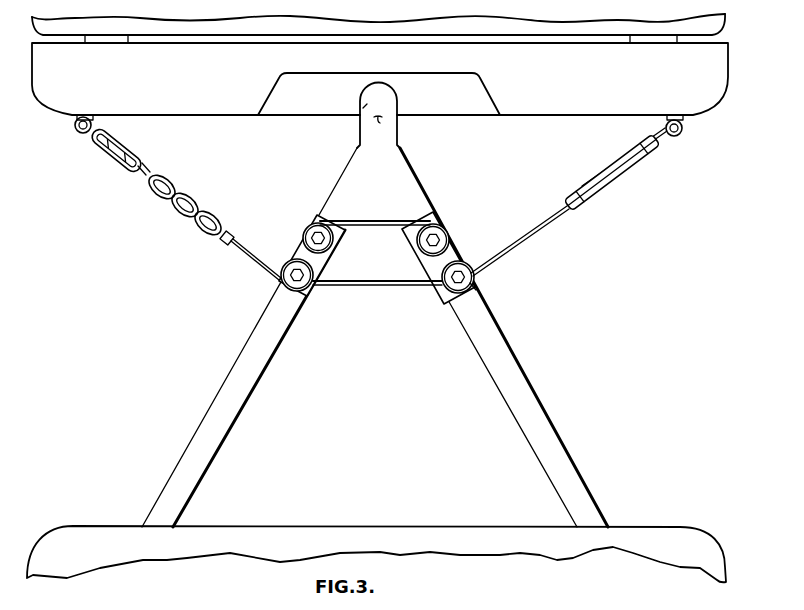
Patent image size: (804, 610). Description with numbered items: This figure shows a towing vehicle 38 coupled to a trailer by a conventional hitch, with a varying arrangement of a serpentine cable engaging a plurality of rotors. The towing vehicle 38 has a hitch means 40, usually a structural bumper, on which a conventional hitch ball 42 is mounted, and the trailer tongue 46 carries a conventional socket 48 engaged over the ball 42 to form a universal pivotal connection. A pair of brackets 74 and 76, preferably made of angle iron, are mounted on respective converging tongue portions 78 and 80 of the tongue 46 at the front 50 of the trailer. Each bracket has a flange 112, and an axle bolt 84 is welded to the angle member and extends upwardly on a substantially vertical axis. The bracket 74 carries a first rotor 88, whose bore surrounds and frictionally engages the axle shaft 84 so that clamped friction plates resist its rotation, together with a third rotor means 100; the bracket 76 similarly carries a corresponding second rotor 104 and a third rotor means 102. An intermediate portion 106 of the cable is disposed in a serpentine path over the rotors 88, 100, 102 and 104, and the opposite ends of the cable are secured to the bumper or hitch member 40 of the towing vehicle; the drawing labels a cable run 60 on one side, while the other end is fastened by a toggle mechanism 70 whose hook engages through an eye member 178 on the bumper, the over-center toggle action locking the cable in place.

The towing vehicle 38 is at (310, 30).
The hitch means 40 is at (602, 86).
The hitch ball 42 is at (398, 127).
The tongue 46 is at (523, 372).
The socket 48 is at (360, 105).
The front of the trailer 50 is at (417, 527).
The tie cable 60 is at (562, 217).
The toggle mechanism 70 is at (622, 168).
The bracket 74 is at (300, 242).
The bracket 76 is at (457, 250).
The converging tongue portion 78 is at (287, 332).
The converging tongue portion 80 is at (470, 331).
The axle bolt 84 is at (293, 272).
The first rotor 88 is at (278, 285).
The third rotor means 100 is at (331, 248).
The third rotor means 102 is at (452, 224).
The second rotor 104 is at (483, 292).
The intermediate portion of the cable 106 is at (368, 220).
The flange 112 is at (312, 293).
The eye member 178 is at (683, 138).